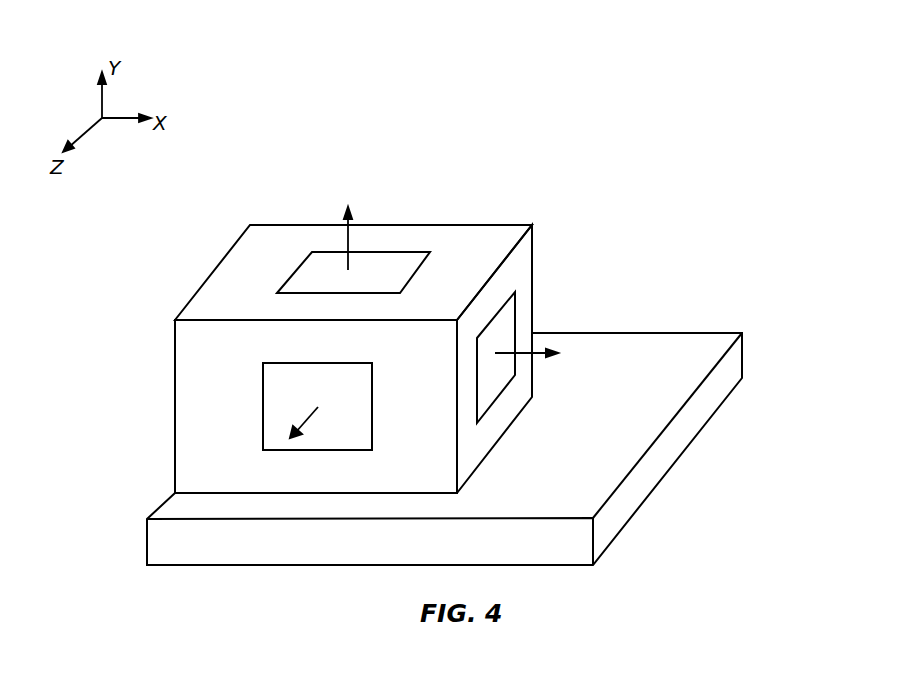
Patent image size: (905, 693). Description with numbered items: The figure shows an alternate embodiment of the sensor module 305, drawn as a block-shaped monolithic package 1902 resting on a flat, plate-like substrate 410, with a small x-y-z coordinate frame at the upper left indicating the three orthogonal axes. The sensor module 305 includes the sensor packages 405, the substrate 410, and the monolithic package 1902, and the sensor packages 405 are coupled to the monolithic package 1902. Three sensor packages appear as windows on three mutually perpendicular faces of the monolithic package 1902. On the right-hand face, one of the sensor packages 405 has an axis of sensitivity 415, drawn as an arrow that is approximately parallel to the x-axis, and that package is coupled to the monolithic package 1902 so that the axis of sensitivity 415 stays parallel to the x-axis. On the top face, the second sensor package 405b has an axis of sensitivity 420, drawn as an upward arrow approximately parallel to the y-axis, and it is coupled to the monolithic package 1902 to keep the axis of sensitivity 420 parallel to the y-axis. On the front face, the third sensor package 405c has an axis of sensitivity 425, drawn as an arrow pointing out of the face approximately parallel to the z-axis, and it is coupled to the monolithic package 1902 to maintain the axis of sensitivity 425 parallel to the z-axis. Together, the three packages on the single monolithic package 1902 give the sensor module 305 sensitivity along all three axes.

The sensor module 305 is at (702, 117).
The substrate 410 is at (156, 550).
The sensor packages 405 is at (503, 315).
The monolithic package 1902 is at (518, 228).
The second sensor package 405b is at (415, 263).
The third sensor package 405c is at (270, 377).
The axis of sensitivity 420 is at (346, 240).
The axis of sensitivity 415 is at (536, 357).
The axis of sensitivity 425 is at (316, 408).